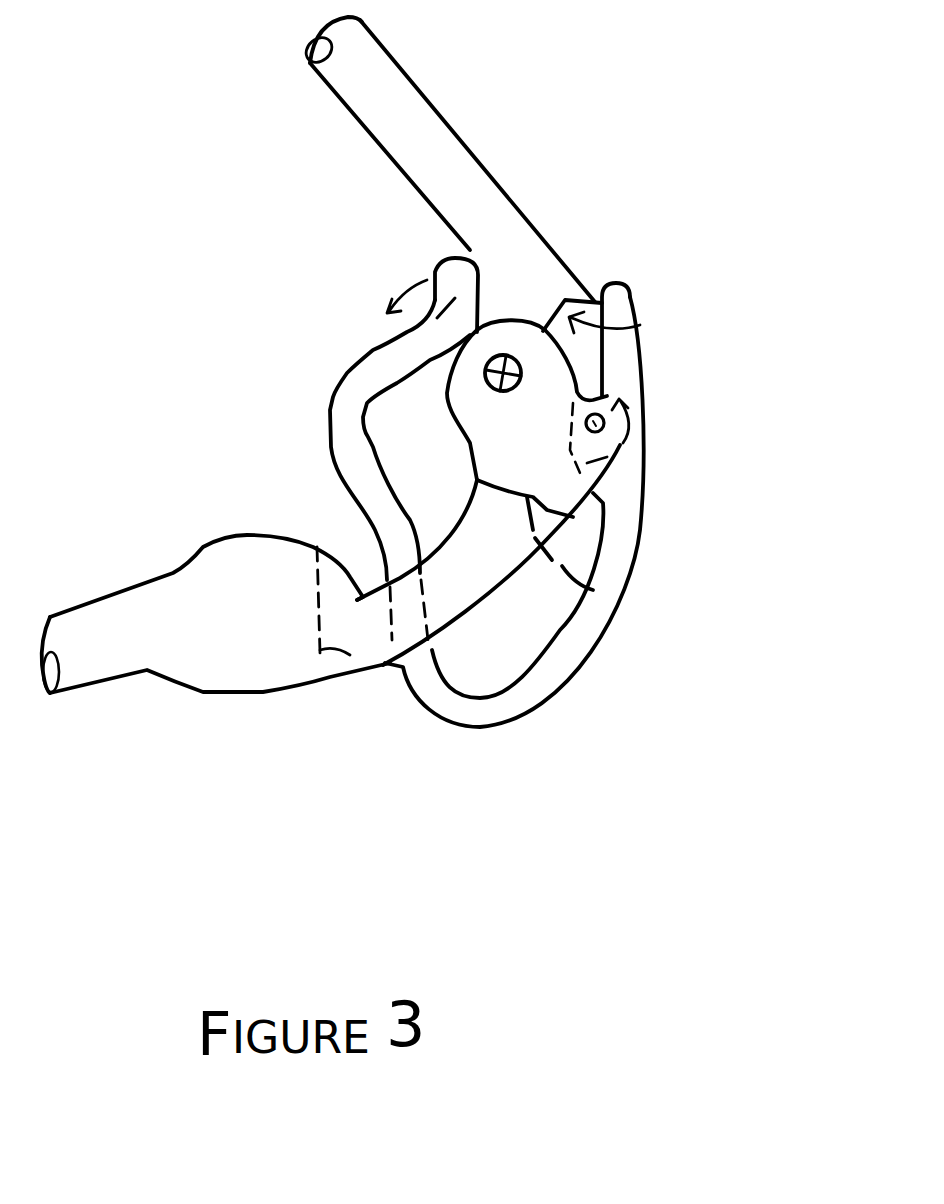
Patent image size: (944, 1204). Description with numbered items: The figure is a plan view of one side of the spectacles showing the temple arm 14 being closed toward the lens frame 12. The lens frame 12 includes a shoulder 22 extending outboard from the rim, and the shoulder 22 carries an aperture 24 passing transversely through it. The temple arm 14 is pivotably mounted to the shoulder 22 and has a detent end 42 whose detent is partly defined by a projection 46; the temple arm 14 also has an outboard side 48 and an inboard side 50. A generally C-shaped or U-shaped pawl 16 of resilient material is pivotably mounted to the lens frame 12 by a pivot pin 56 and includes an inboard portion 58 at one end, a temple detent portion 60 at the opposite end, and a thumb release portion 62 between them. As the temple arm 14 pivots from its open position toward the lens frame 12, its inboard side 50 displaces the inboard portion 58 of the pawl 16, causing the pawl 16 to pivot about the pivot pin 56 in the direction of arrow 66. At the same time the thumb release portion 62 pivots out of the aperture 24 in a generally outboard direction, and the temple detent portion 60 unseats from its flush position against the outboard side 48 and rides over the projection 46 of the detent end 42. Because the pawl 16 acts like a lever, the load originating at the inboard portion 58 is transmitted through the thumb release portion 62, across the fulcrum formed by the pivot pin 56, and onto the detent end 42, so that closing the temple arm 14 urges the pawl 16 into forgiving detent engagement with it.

The lens frame 12 is at (245, 730).
The temple arm 14 is at (400, 113).
The pawl 16 is at (347, 440).
The shoulder 22 is at (483, 583).
The aperture 24 is at (607, 592).
The detent end 42 is at (640, 325).
The projection 46 is at (577, 293).
The outboard side 48 is at (535, 222).
The inboard side 50 is at (466, 244).
The pivot pin 56 is at (604, 400).
The inboard portion 58 is at (410, 333).
The temple detent portion 60 is at (617, 305).
The thumb release portion 62 is at (478, 713).
The arrow 66 is at (623, 440).